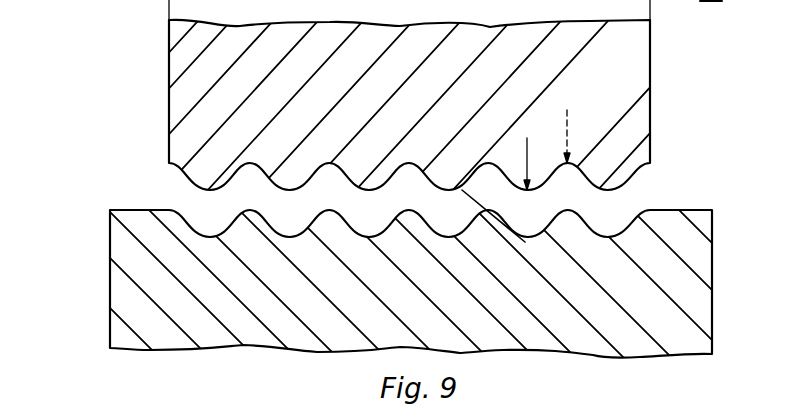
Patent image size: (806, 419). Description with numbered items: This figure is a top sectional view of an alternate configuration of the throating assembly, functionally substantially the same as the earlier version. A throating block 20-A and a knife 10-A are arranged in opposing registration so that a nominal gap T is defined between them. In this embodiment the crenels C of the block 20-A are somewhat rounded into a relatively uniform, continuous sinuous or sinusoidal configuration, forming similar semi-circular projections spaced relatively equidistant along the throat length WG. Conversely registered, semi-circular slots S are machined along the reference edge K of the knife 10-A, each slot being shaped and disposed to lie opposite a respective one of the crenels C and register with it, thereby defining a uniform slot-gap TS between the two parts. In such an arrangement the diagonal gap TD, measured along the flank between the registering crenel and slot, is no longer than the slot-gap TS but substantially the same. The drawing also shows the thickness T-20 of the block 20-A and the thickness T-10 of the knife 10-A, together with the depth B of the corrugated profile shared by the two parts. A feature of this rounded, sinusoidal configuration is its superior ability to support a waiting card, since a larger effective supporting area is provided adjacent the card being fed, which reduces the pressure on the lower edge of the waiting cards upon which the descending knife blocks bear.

The throating block 20-A is at (441, 81).
The knife 10-A is at (404, 282).
The throat length WG is at (650, 4).
The thickness of layer 20-A T-20 is at (169, 163).
The thickness of layer 10-A T-10 is at (200, 237).
The corrugation depth B is at (200, 190).
The reference edge K is at (110, 210).
The nominal gap T is at (760, 190).
The semi-circular slots S is at (257, 167).
The crenels C is at (252, 214).
The diagonal gap TD is at (468, 197).
The slot-gap TS is at (527, 237).